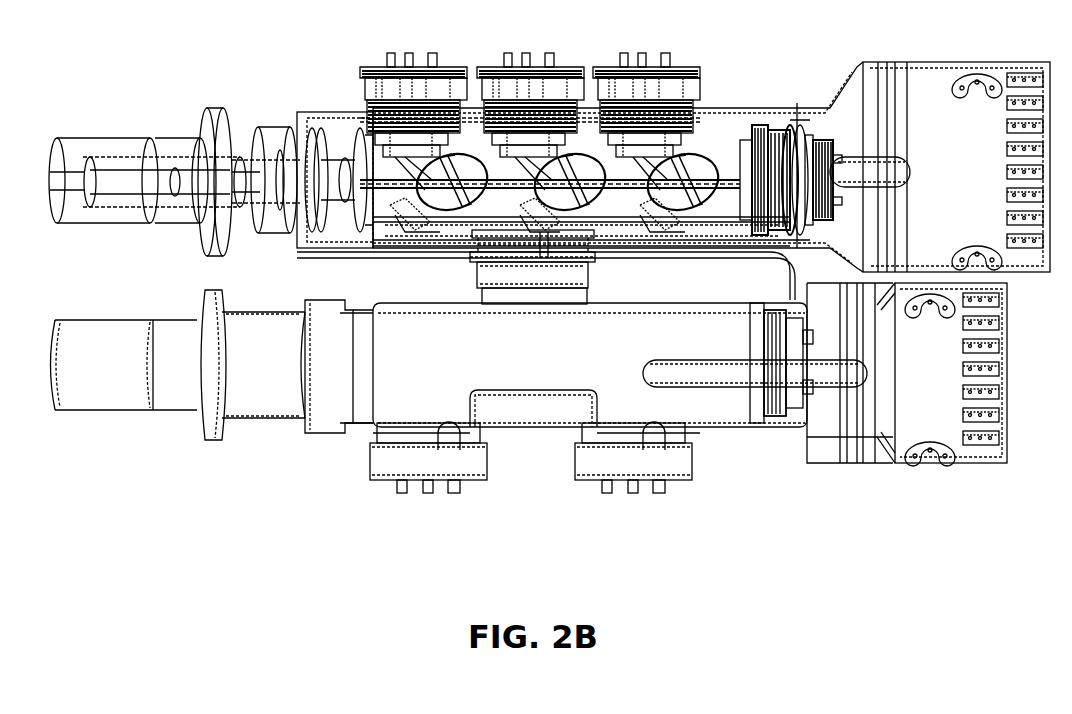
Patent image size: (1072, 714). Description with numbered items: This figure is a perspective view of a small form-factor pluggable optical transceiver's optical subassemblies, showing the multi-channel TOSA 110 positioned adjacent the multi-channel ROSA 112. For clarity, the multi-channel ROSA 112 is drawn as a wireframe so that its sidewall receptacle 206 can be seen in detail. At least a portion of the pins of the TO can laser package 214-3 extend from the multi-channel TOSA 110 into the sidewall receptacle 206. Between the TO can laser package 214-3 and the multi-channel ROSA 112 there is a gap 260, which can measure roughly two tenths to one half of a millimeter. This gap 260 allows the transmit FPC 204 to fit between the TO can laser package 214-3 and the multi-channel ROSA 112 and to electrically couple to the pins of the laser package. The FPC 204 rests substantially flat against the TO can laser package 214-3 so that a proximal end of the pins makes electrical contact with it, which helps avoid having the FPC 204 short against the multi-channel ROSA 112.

The multi-channel TOSA 110 is at (683, 393).
The multi-channel ROSA 112 is at (365, 110).
The transmit flexible printed circuit 204 is at (690, 257).
The sidewall receptacle 206 is at (578, 235).
The TO can laser package 214-3 is at (520, 277).
The gap 260 is at (462, 258).